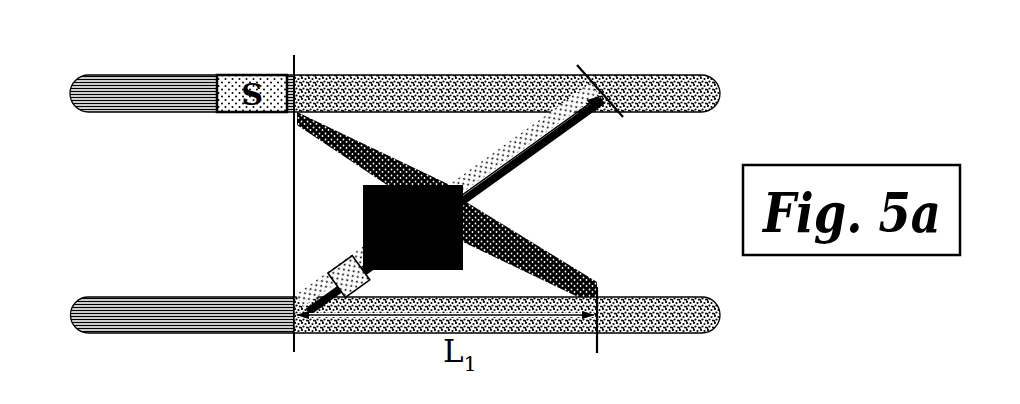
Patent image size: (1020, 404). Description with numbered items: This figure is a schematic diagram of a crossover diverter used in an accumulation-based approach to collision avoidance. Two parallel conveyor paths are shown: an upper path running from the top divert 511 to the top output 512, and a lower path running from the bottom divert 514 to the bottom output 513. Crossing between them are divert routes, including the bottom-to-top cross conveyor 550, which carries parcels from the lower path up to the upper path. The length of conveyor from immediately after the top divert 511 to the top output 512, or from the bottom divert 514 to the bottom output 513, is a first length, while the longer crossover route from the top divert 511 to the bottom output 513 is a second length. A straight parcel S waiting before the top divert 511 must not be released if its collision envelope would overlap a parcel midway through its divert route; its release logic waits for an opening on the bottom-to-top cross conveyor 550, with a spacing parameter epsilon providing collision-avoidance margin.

The top divert 511 is at (297, 88).
The top output 512 is at (605, 92).
The bottom output 513 is at (602, 300).
The bottom divert 514 is at (296, 333).
The bottom-to-top cross conveyor 550 is at (520, 130).